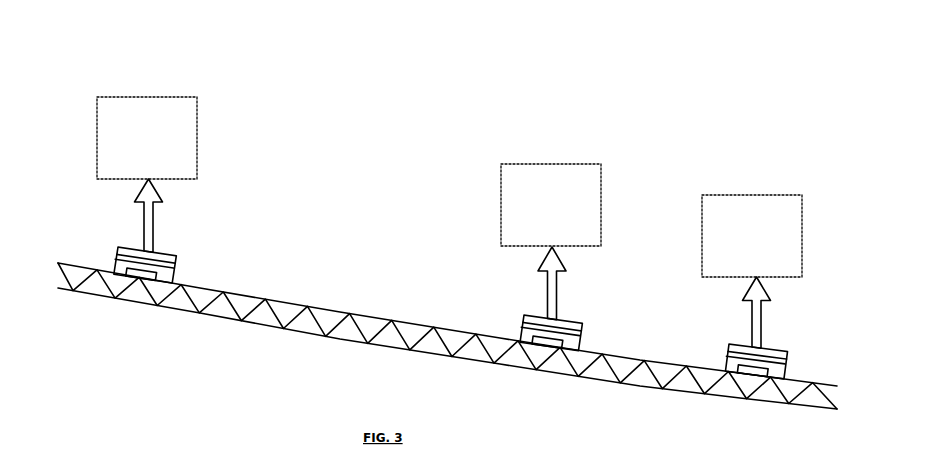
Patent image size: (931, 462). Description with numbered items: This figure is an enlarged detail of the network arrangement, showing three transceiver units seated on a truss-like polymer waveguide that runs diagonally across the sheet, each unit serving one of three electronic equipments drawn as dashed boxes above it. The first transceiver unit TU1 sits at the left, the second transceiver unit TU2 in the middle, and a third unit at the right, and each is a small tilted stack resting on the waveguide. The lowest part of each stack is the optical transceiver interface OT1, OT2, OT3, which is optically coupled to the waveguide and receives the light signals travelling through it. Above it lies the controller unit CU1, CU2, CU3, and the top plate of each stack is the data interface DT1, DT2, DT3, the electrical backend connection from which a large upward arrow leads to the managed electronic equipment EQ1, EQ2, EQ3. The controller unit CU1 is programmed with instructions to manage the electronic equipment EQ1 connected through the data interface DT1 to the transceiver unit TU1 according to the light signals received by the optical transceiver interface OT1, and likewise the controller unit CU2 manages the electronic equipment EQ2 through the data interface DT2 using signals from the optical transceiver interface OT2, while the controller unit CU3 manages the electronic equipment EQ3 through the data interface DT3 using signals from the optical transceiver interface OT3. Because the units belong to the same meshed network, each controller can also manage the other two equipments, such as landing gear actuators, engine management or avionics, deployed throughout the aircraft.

The electronic equipment EQ1 is at (151, 97).
The electronic equipment EQ2 is at (542, 164).
The electronic equipment EQ3 is at (745, 195).
The transceiver unit TU1 is at (152, 236).
The transceiver unit TU2 is at (556, 303).
The data interface DT1 is at (164, 252).
The data interface DT2 is at (569, 318).
The data interface DT3 is at (775, 346).
The controller unit CU1 is at (176, 267).
The controller unit CU2 is at (583, 332).
The controller unit CU3 is at (789, 360).
The optical transceiver interface OT1 is at (159, 272).
The optical transceiver interface OT2 is at (565, 341).
The optical transceiver interface OT3 is at (770, 369).